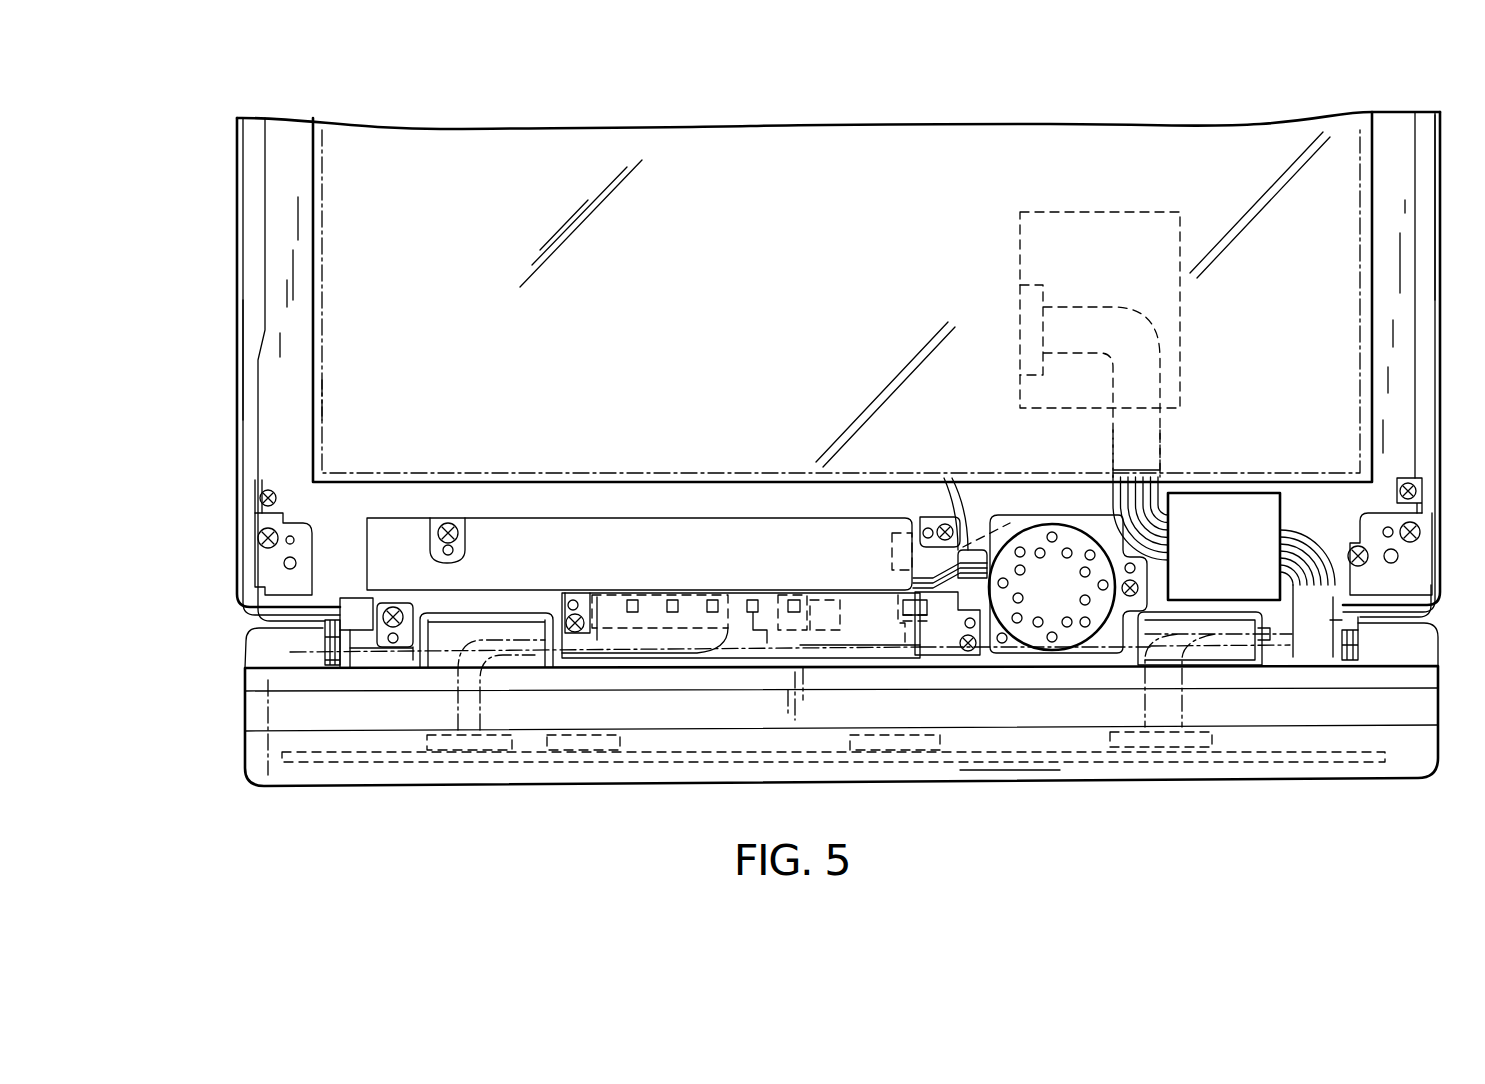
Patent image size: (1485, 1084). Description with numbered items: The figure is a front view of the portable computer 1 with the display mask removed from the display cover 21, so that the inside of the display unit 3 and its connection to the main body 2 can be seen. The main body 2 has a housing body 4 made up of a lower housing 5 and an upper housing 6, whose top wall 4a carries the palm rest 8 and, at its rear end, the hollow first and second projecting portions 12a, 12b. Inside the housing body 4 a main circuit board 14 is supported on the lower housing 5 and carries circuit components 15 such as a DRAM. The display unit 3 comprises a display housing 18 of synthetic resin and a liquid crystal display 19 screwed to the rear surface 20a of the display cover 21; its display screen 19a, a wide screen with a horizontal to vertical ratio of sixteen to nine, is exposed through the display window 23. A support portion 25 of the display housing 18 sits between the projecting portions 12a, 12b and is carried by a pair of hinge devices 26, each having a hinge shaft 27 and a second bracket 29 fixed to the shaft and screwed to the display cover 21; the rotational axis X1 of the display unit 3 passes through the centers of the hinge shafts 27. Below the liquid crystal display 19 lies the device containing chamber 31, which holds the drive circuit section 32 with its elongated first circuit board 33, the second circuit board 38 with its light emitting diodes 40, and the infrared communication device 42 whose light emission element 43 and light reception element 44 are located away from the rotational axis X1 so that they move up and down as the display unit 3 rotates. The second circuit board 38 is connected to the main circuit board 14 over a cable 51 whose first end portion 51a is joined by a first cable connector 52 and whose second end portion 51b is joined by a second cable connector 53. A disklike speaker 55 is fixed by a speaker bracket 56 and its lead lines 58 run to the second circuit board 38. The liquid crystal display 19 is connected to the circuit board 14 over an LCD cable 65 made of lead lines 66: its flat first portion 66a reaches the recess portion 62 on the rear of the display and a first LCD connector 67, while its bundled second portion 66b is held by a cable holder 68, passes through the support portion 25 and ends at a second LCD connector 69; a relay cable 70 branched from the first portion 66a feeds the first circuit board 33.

The portable computer 1 is at (993, 122).
The main body 2 is at (243, 680).
The display unit 3 is at (481, 170).
The housing body 4 is at (206, 706).
The top wall 4a is at (1010, 745).
The lower housing 5 is at (262, 752).
The upper housing 6 is at (262, 700).
The palm rest 8 is at (1094, 680).
The first projecting portion 12a is at (259, 641).
The second projecting portion 12b is at (1413, 636).
The main circuit board 14 is at (665, 758).
The circuit components 15 is at (792, 765).
The display housing 18 is at (242, 155).
The liquid crystal display 19 is at (775, 145).
The display screen 19a is at (925, 299).
The rear surface 20a is at (253, 313).
The display cover 21 is at (1423, 118).
The display window 23 is at (330, 395).
The support portion 25 is at (380, 657).
The hinge device 26 is at (327, 588).
The hinge shaft 27 is at (327, 655).
The second bracket 29 is at (365, 615).
The device containing chamber 31 is at (639, 535).
The drive circuit section 32 is at (622, 525).
The first circuit board 33 is at (496, 525).
The second circuit board 38 is at (648, 635).
The light emitting diodes 40 is at (640, 602).
The infrared communication device 42 is at (805, 600).
The light emission element 43 is at (780, 625).
The light reception element 44 is at (825, 625).
The cable 51 is at (512, 640).
The first end portion 51a is at (608, 625).
The second end portion 51b is at (458, 710).
The first cable connector 52 is at (620, 625).
The second cable connector 53 is at (496, 745).
The speaker 55 is at (1073, 528).
The speaker bracket 56 is at (978, 525).
The lead lines 58 is at (943, 480).
The recess portion 62 is at (1078, 216).
The LCD cable 65 is at (1172, 482).
The lead lines 66 is at (1167, 549).
The first portion 66a is at (1163, 427).
The second portion 66b is at (1262, 645).
The first LCD connector 67 is at (1023, 315).
The cable holder 68 is at (1262, 510).
The second LCD connector 69 is at (1175, 745).
The relay cable 70 is at (1033, 520).
The rotational axis X1 is at (920, 650).